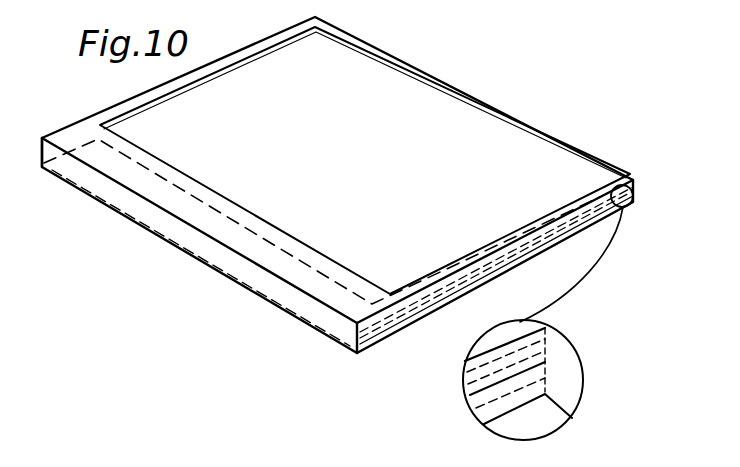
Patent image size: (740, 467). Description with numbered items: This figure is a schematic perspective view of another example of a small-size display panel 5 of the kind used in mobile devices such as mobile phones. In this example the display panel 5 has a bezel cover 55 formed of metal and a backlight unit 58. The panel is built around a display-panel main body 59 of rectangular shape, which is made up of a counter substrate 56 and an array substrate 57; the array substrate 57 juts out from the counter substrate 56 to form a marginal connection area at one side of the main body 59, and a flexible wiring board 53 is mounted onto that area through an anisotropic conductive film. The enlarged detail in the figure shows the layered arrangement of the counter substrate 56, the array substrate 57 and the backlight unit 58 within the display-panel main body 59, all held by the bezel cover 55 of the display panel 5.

The display panel 5 is at (681, 133).
The flexible wiring board (FPC) 53 is at (237, 273).
The bezel cover 55 is at (42, 166).
The counter substrate 56 is at (540, 334).
The array substrate 57 is at (540, 355).
The backlight unit 58 is at (540, 388).
The display-panel main body 59 is at (586, 352).